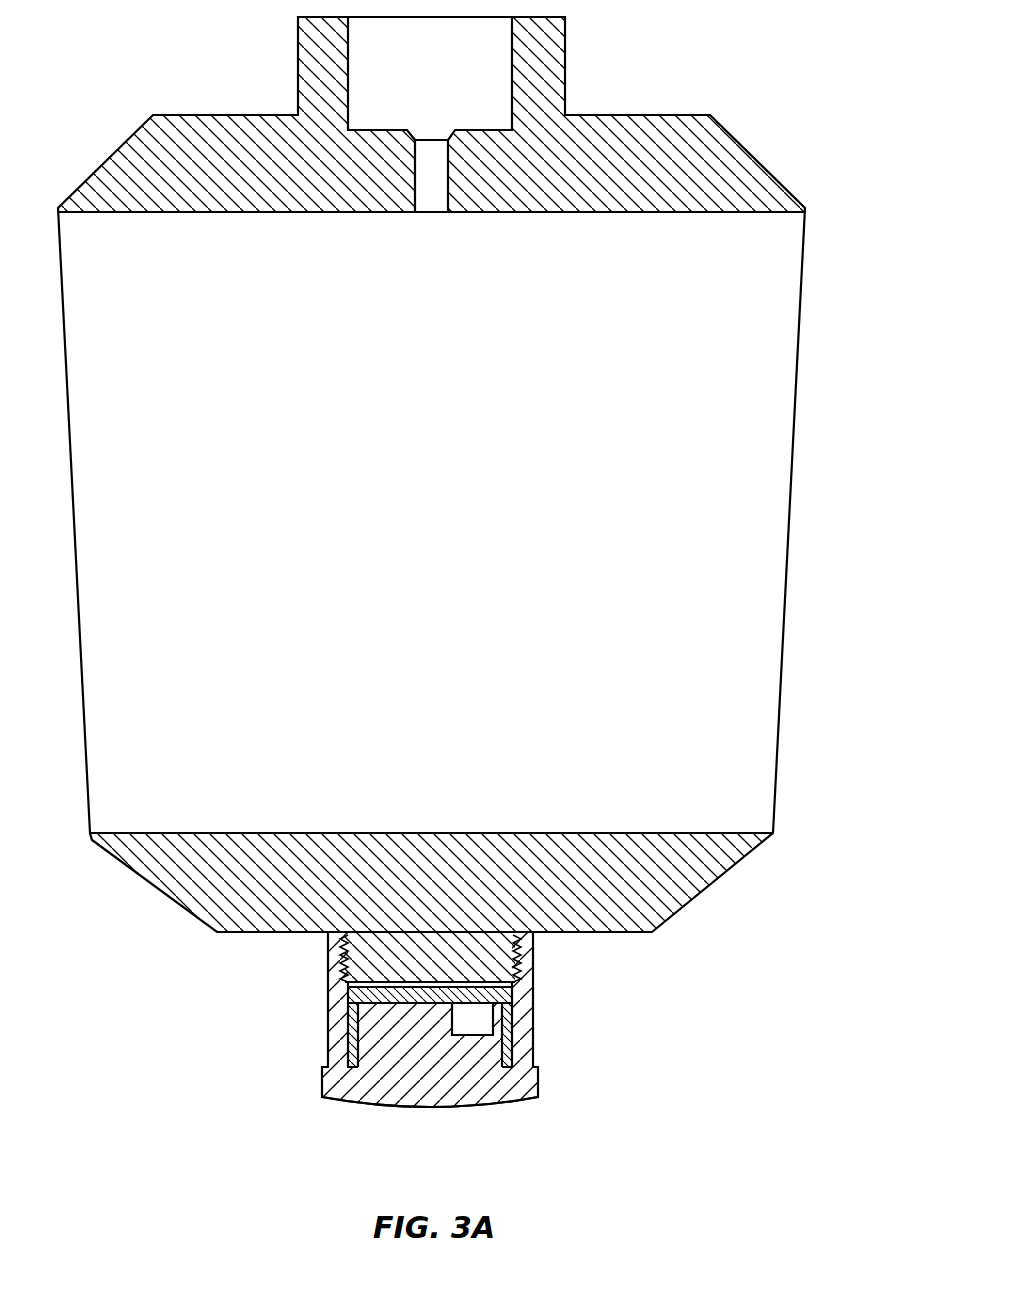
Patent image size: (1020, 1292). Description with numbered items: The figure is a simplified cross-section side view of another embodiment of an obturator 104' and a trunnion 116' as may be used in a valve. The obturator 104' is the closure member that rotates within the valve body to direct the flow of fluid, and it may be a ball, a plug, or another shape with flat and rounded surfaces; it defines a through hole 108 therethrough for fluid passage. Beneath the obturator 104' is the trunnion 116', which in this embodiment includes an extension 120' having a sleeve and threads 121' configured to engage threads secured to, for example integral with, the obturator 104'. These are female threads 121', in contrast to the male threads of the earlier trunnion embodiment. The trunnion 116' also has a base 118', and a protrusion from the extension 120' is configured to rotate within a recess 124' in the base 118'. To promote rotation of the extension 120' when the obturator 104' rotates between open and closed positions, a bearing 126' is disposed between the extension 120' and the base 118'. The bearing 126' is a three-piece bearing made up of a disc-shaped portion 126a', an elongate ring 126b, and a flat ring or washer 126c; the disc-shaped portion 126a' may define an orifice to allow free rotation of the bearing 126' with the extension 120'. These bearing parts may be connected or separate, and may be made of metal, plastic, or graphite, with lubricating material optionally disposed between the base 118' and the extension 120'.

The obturator 104' is at (465, 114).
The through hole 108 is at (757, 628).
The trunnion 116' is at (451, 1054).
The base 118' is at (404, 1136).
The extension 120' is at (379, 1019).
The threads 121' is at (431, 909).
The recess 124' is at (484, 1090).
The bearing 126' is at (540, 1035).
The disc-shaped portion 126a' is at (507, 999).
The elongate ring 126b is at (500, 1013).
The flat ring or washer 126c is at (528, 1062).